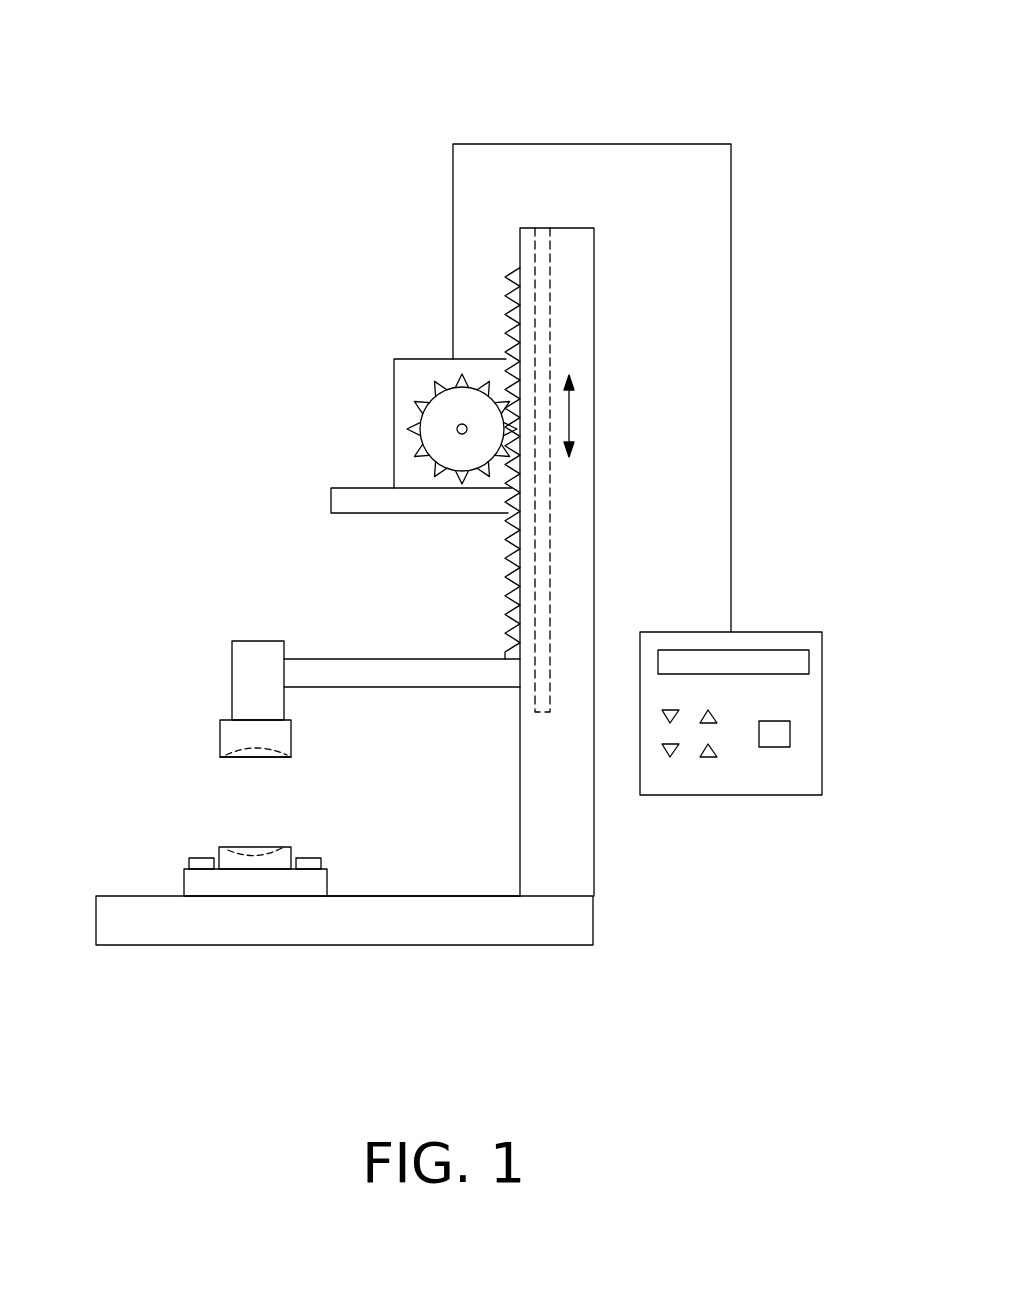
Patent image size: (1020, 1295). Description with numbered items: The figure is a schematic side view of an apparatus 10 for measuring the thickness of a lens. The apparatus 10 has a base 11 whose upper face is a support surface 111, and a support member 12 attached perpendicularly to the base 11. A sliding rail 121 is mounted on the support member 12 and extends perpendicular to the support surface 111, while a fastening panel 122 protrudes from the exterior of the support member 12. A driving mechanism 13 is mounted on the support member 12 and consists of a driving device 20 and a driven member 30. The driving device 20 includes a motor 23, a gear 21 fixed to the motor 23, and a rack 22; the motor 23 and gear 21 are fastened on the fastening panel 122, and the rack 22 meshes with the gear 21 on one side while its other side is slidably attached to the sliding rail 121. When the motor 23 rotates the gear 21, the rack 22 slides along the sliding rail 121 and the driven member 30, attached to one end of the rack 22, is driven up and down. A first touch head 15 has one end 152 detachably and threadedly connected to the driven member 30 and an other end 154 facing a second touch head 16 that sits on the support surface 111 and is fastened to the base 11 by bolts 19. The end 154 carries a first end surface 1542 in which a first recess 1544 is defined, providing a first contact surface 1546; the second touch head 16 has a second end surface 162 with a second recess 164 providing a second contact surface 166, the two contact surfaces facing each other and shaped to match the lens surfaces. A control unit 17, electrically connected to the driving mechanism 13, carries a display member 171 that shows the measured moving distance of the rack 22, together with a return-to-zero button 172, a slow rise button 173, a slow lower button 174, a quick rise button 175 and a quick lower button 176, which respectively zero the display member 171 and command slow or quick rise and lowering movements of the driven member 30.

The apparatus 10 is at (485, 50).
The base 11 is at (133, 925).
The support surface 111 is at (490, 895).
The support member 12 is at (577, 245).
The sliding rail 121 is at (540, 297).
The fastening panel 122 is at (483, 502).
The driving mechanism 13 is at (117, 457).
The first touch head 15 is at (80, 658).
The end of first touch head 152 is at (225, 718).
The other end of first touch head 154 is at (227, 748).
The first end surface 1542 is at (291, 758).
The first recess 1544 is at (266, 753).
The first contact surface 1546 is at (253, 749).
The second touch head 16 is at (240, 885).
The second end surface 162 is at (288, 847).
The second recess 164 is at (213, 858).
The second contact surface 166 is at (249, 851).
The control unit 17 is at (790, 778).
The display member 171 is at (777, 663).
The return-to-zero button 172 is at (777, 733).
The slow rise button 173 is at (712, 715).
The slow lower button 174 is at (672, 707).
The quick rise button 175 is at (712, 750).
The quick lower button 176 is at (670, 754).
The bolts 19 is at (309, 862).
The driving device 20 is at (188, 385).
The gear 21 is at (438, 440).
The rack 22 is at (513, 532).
The motor 23 is at (403, 415).
The driven member 30 is at (325, 672).